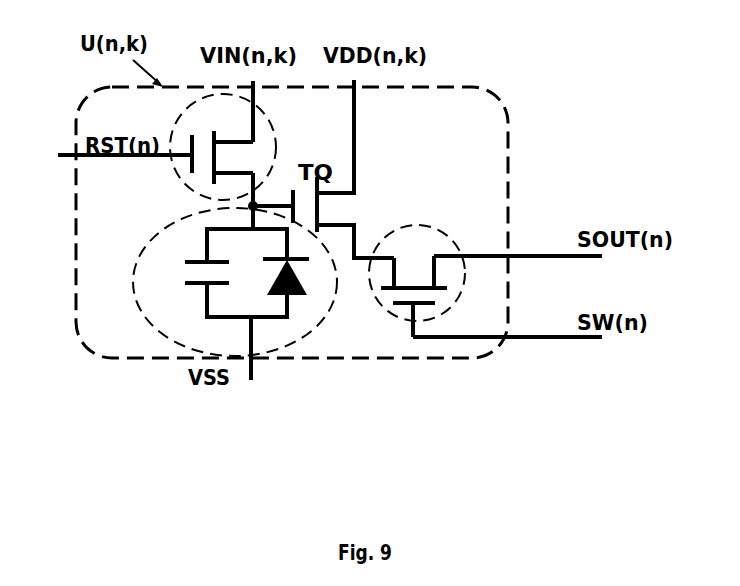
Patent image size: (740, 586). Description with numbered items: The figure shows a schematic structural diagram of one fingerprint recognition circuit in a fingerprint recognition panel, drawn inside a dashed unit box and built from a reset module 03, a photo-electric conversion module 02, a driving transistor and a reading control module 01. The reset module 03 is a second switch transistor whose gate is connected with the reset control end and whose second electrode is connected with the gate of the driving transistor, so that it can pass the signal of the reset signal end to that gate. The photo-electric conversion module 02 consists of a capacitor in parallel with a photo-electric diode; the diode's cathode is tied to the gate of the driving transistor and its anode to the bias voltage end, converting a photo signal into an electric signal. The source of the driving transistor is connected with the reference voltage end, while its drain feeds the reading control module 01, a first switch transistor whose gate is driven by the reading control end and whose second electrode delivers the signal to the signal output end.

The reading control module 01 is at (415, 327).
The photo-electric conversion module 02 is at (132, 277).
The reset module 03 is at (188, 178).